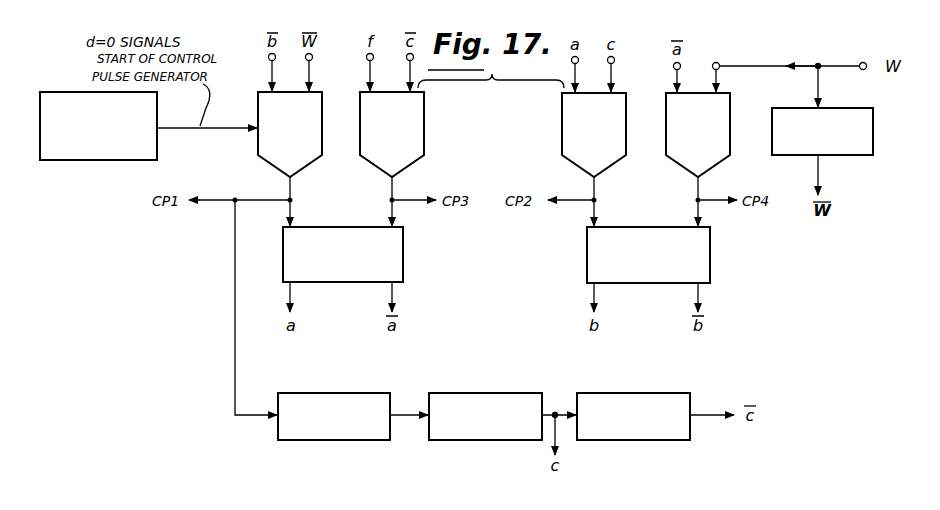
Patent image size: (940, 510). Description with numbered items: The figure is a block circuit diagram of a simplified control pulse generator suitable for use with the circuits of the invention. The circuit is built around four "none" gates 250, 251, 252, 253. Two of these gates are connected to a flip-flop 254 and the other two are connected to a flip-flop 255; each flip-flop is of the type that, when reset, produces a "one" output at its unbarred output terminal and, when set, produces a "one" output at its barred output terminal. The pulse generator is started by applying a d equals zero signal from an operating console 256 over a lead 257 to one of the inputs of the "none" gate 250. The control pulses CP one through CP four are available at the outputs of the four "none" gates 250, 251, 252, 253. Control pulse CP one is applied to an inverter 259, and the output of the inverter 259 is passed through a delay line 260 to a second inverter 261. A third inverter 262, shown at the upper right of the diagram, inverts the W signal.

The none gate 250 is at (278, 170).
The none gate 251 is at (376, 168).
The none gate 252 is at (580, 165).
The none gate 253 is at (680, 166).
The flip-flop 254 is at (403, 258).
The flip-flop 255 is at (710, 258).
The operating console 256 is at (100, 160).
The lead 257 is at (222, 134).
The inverter 259 is at (316, 392).
The delay line 260 is at (478, 392).
The inverter 261 is at (617, 392).
The inverter 262 is at (873, 131).